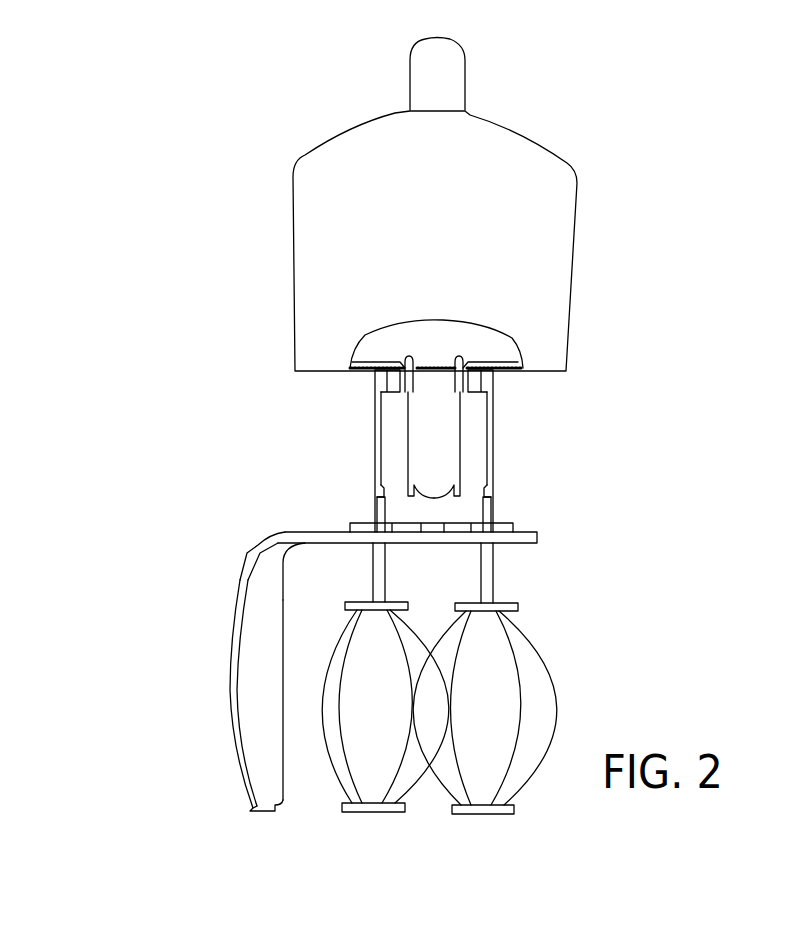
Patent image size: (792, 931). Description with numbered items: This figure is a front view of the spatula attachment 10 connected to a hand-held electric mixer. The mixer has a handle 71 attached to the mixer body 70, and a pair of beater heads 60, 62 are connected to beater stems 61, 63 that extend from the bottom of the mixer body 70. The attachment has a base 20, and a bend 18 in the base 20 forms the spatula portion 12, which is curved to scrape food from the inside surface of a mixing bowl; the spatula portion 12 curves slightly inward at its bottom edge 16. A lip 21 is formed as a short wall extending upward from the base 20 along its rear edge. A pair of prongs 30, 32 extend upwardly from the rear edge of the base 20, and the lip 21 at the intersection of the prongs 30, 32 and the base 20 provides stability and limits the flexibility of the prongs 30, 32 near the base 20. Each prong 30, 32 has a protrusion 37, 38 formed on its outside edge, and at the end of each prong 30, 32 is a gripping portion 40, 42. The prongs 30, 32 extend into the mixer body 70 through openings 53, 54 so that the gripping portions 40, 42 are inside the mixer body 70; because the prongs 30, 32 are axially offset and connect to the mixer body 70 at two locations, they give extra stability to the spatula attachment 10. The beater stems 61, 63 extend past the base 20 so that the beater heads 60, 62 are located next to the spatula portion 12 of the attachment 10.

The spatula attachment 10 is at (115, 473).
The spatula portion 12 is at (228, 670).
The bottom edge 16 is at (245, 812).
The bend 18 is at (247, 553).
The base 20 is at (328, 532).
The lip 21 is at (513, 530).
The prong 30 is at (387, 418).
The prong 32 is at (473, 418).
The protrusion 37 is at (373, 492).
The protrusion 38 is at (495, 495).
The gripping portion 40 is at (413, 360).
The gripping portion 42 is at (467, 360).
The opening 53 is at (352, 361).
The opening 54 is at (518, 361).
The beater head 60 is at (327, 777).
The beater stem 61 is at (373, 458).
The beater head 62 is at (547, 663).
The beater stem 63 is at (495, 458).
The mixer body 70 is at (293, 258).
The handle 71 is at (410, 72).